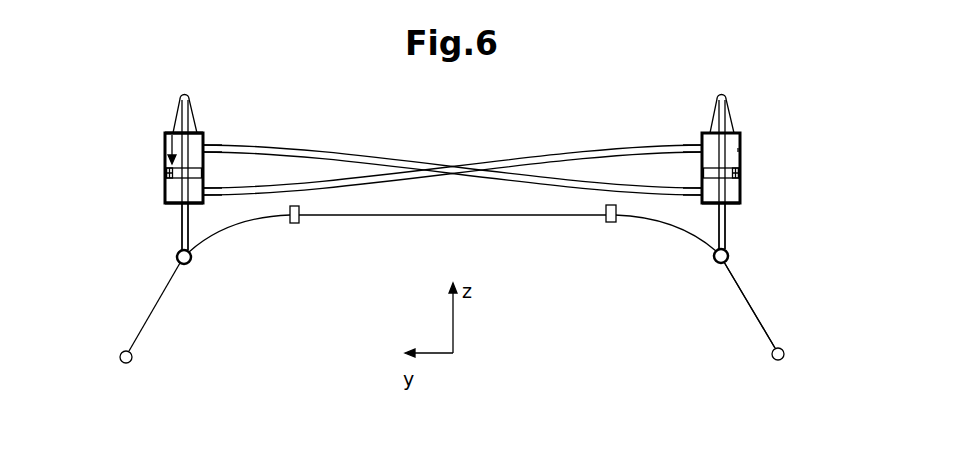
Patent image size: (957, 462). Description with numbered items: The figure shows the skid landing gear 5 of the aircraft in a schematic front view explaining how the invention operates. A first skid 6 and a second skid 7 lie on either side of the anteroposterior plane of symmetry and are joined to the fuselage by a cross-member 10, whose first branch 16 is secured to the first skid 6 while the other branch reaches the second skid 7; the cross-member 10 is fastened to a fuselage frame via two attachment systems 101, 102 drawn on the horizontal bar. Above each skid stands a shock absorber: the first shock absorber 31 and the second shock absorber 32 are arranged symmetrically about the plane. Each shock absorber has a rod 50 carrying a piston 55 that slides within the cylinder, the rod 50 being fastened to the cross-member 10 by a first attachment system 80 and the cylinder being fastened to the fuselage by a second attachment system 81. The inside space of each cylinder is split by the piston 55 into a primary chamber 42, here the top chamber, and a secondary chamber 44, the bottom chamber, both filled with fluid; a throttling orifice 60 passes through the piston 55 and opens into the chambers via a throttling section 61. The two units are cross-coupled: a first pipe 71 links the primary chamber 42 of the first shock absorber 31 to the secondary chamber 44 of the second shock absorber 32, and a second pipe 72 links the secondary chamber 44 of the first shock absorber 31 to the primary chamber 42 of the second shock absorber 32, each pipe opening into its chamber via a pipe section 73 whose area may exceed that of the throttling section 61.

The skid landing gear 5 is at (742, 348).
The first longitudinal bearing skid 6 is at (120, 357).
The second longitudinal bearing skid 7 is at (785, 354).
The cross-member 10 is at (745, 293).
The first branch 16 is at (222, 228).
The first shock absorber 31 is at (166, 134).
The second shock absorber 32 is at (741, 136).
The primary chamber 42 is at (172, 135).
The secondary chamber 44 is at (172, 189).
The rod 50 is at (181, 222).
The piston 55 is at (203, 172).
The throttling orifice 60 is at (165, 178).
The throttling section 61 is at (165, 136).
The first pipe 71 is at (400, 158).
The second pipe 72 is at (396, 184).
The pipe section 73 is at (195, 132).
The first attachment system 80 is at (177, 258).
The second attachment system 81 is at (184, 92).
The attachment system 101 is at (295, 223).
The attachment system 102 is at (612, 222).